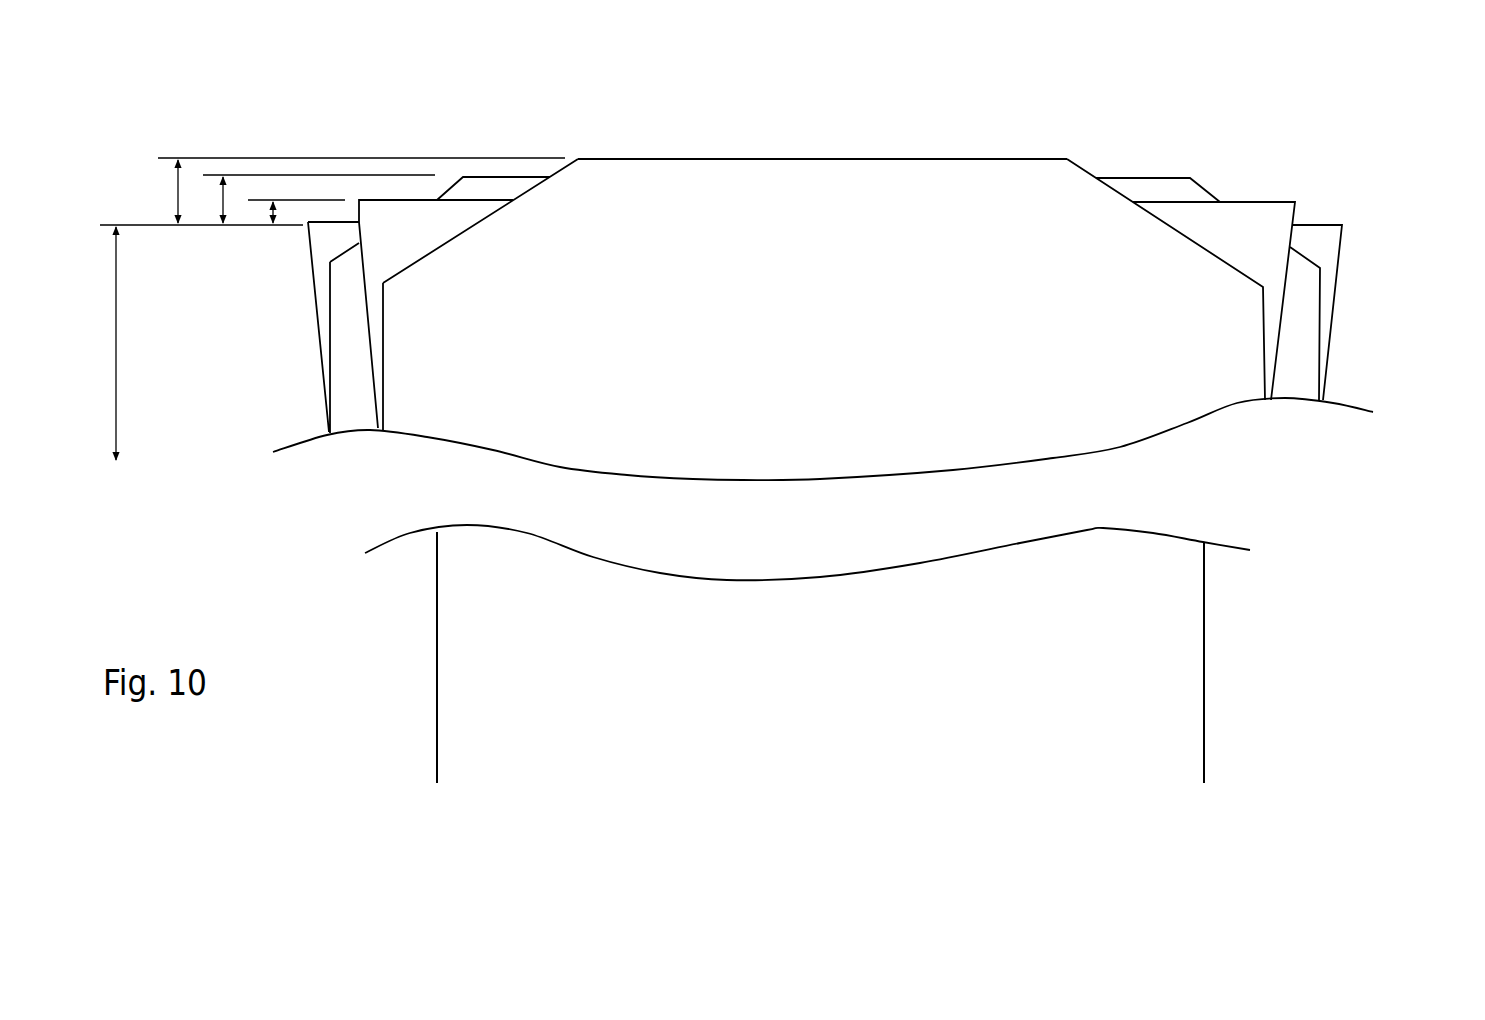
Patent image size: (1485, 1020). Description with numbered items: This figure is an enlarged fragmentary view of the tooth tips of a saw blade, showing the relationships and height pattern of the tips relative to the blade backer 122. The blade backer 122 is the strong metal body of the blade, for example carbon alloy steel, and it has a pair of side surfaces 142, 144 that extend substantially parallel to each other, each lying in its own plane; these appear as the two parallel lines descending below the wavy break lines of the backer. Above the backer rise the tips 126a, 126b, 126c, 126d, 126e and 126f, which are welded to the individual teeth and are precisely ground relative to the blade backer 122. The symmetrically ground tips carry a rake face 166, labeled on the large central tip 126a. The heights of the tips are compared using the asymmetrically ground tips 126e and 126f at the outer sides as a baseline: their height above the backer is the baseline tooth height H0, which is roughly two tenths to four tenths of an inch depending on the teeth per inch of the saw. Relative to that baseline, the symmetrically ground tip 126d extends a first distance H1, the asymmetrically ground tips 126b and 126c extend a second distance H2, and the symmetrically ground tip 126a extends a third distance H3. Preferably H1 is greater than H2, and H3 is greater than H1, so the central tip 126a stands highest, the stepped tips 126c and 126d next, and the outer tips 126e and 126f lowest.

The tip 126a is at (939, 200).
The tip 126b is at (1223, 217).
The tip 126c is at (437, 218).
The tip 126d is at (1165, 188).
The tip 126e is at (1313, 243).
The tip 126f is at (332, 243).
The rake face 166 is at (858, 298).
The blade backer 122 is at (470, 612).
The side surface 142 is at (437, 662).
The side surface 144 is at (1207, 618).
The baseline tooth height H0 is at (118, 335).
The first distance H1 is at (221, 222).
The second distance H2 is at (270, 235).
The third distance H3 is at (177, 214).